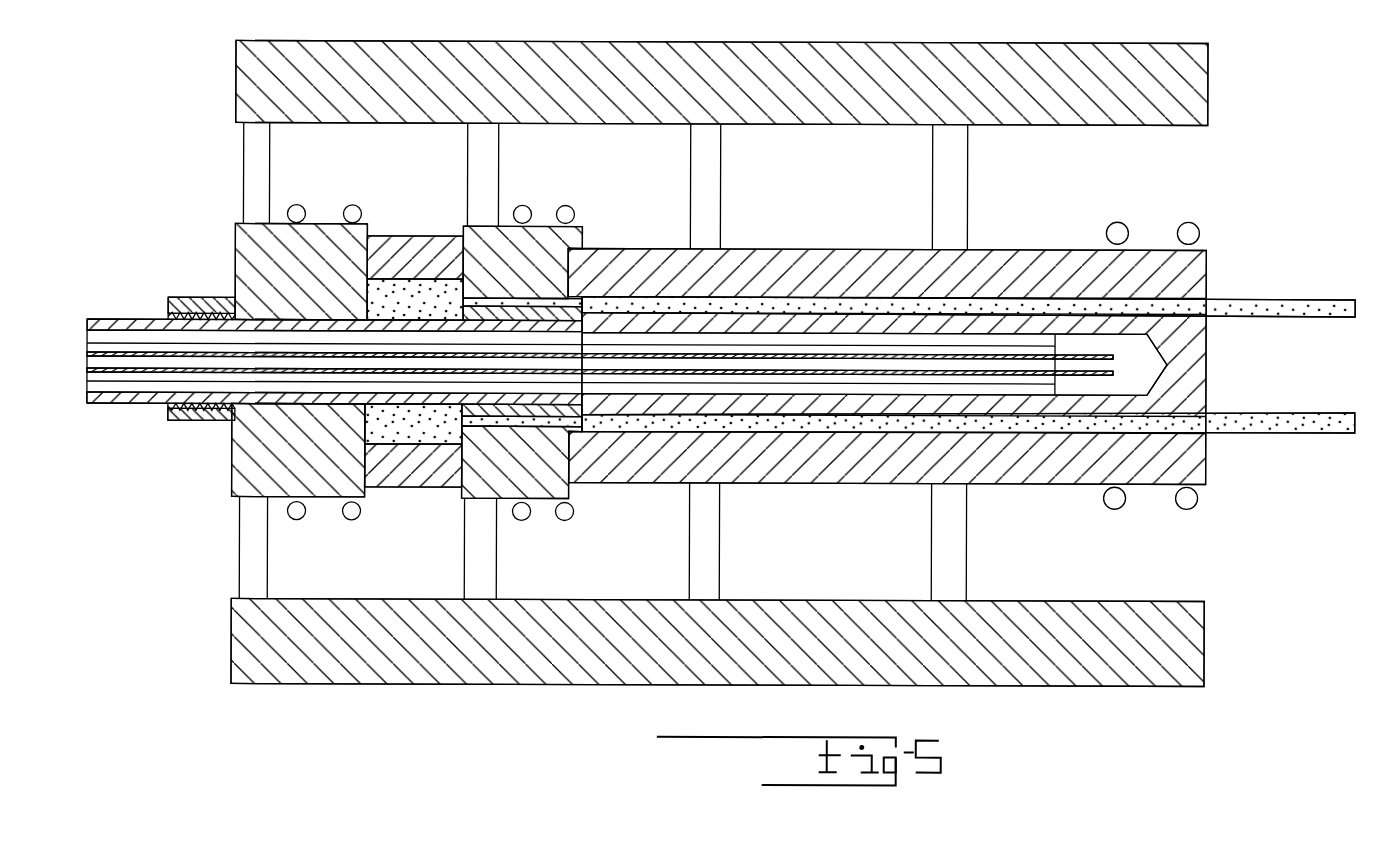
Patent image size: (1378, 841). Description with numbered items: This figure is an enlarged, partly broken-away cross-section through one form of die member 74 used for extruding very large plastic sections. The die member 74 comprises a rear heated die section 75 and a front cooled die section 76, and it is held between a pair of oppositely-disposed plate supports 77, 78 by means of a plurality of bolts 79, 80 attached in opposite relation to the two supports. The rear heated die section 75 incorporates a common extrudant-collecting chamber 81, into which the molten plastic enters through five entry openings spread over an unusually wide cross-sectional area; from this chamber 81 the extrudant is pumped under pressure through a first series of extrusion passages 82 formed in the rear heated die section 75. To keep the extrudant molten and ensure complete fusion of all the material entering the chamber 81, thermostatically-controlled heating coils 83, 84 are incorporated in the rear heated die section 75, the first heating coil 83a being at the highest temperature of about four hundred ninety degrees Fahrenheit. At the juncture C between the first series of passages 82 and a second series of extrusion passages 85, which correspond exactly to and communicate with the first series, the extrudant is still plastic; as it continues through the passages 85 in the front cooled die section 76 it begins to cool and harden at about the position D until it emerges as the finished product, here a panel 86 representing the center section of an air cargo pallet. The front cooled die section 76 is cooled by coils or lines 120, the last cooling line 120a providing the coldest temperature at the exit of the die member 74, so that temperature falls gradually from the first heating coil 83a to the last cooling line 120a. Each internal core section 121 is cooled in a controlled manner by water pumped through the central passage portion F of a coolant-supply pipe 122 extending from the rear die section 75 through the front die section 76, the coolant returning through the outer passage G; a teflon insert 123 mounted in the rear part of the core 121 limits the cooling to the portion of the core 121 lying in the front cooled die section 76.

The die member 74 is at (222, 541).
The rear heated die section 75 is at (462, 492).
The front cooled die section 76 is at (992, 246).
The plate support 77 is at (777, 40).
The plate support 78 is at (491, 684).
The bolts 79 is at (940, 186).
The bolts 80 is at (930, 545).
The extrudant-collecting chamber 81 is at (394, 288).
The first series of extrusion passages 82 is at (553, 432).
The heating coil 83 is at (354, 204).
The first heating coil 83a is at (298, 204).
The heating coil 84 is at (349, 520).
The second series of extrusion passages 85 is at (767, 296).
The panel 86 is at (1291, 429).
The cooling coils or lines 120 is at (1118, 219).
The last cooling coil or line 120a is at (1196, 222).
The internal core section 121 is at (1206, 378).
The coolant-supply pipe 122 is at (128, 392).
The teflon insert 123 is at (117, 318).
The juncture C is at (582, 300).
The position D is at (841, 304).
The central passage portion F is at (102, 360).
The outer passage G is at (97, 385).